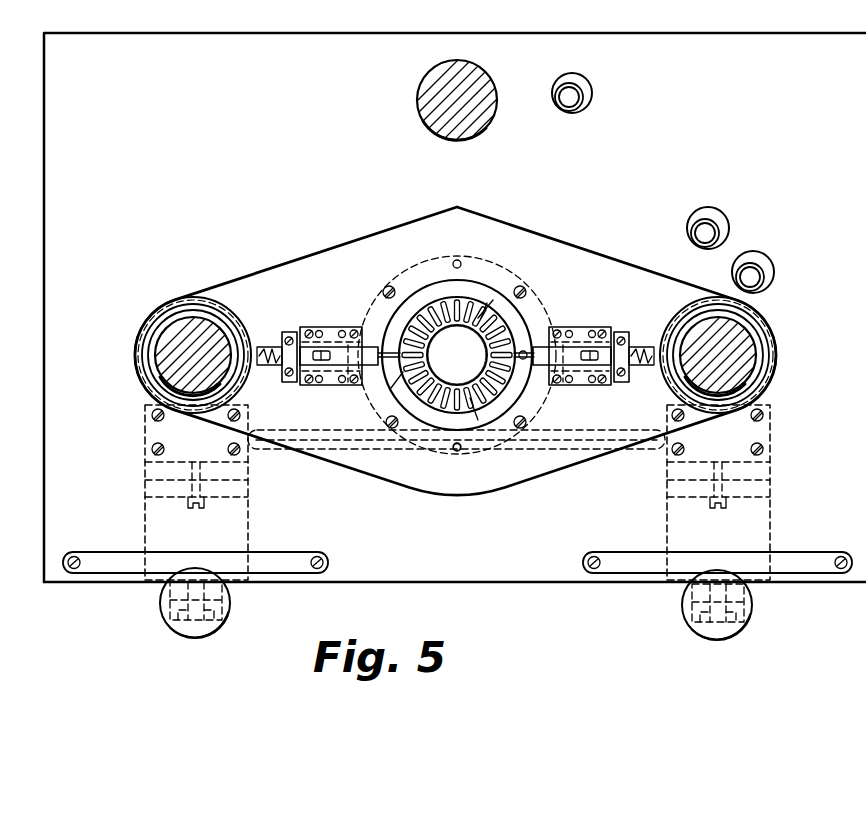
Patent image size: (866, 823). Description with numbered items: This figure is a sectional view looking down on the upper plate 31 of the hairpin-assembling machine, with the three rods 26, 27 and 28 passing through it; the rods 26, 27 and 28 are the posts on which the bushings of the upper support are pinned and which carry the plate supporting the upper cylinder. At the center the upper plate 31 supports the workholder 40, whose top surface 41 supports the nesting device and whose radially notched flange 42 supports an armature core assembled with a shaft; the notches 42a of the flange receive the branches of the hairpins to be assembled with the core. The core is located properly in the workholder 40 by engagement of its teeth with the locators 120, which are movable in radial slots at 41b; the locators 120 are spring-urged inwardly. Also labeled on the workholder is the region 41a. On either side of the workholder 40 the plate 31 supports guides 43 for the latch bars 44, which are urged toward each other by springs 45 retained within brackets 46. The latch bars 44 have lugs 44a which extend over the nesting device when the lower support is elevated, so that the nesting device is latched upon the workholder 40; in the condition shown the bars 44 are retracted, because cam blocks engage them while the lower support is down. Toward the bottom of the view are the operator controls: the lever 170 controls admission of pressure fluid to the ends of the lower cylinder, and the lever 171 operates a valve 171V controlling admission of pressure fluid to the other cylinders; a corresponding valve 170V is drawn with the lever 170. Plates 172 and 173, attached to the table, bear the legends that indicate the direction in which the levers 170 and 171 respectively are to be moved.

The rod 26 is at (168, 351).
The rod 27 is at (745, 365).
The rod 28 is at (440, 78).
The upper plate 31 is at (237, 283).
The workholder 40 is at (520, 398).
The top surface 41 is at (464, 428).
The pivot pin 41a is at (525, 352).
The radial slots 41b is at (483, 312).
The radially notched flange 42 is at (432, 301).
The notches 42a is at (427, 325).
The guides 43 is at (330, 327).
The latch bars 44 is at (354, 372).
The lugs 44a is at (368, 378).
The springs 45 is at (273, 372).
The brackets 46 is at (289, 331).
The locators 120 is at (490, 304).
The lever 170 is at (232, 610).
The lever 171 is at (682, 603).
The bottom ram lamp circuit 170V is at (146, 504).
The valve 171V is at (772, 505).
The plate 172 is at (298, 552).
The plate 173 is at (638, 552).